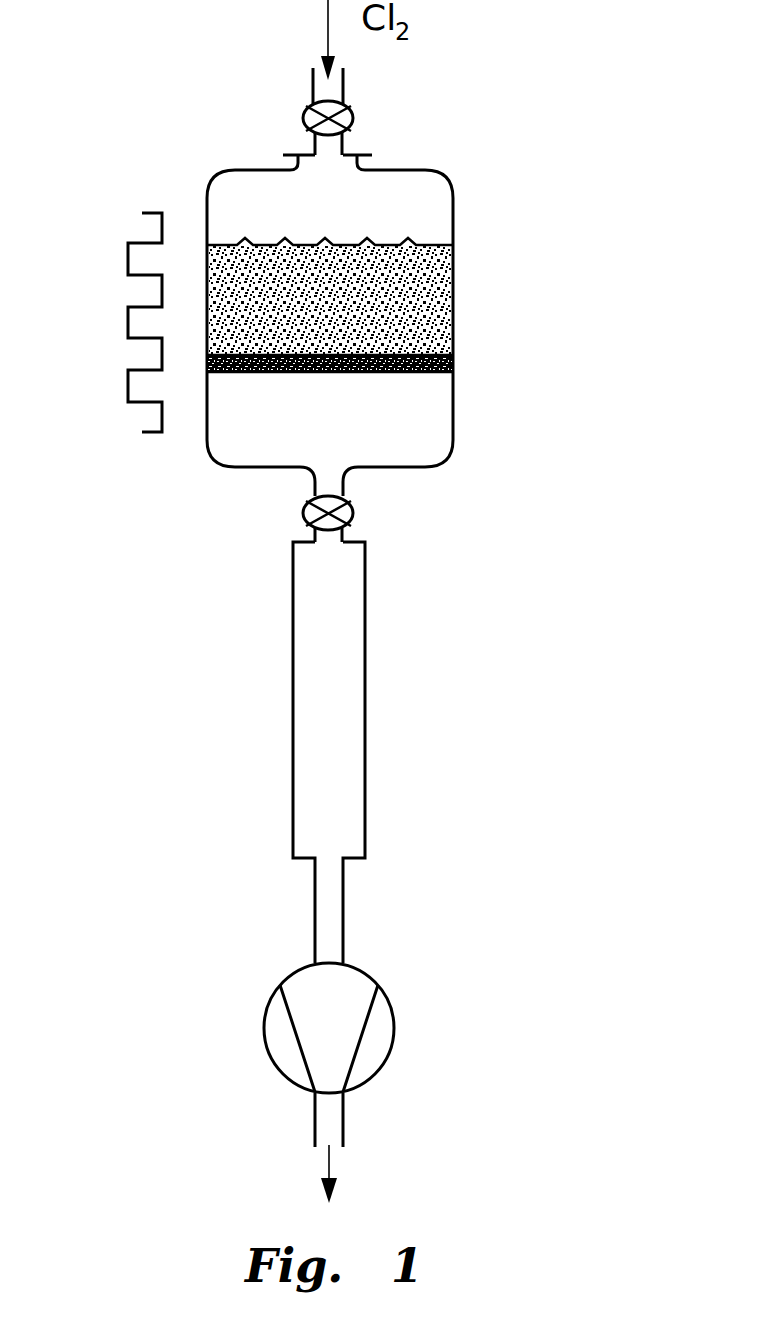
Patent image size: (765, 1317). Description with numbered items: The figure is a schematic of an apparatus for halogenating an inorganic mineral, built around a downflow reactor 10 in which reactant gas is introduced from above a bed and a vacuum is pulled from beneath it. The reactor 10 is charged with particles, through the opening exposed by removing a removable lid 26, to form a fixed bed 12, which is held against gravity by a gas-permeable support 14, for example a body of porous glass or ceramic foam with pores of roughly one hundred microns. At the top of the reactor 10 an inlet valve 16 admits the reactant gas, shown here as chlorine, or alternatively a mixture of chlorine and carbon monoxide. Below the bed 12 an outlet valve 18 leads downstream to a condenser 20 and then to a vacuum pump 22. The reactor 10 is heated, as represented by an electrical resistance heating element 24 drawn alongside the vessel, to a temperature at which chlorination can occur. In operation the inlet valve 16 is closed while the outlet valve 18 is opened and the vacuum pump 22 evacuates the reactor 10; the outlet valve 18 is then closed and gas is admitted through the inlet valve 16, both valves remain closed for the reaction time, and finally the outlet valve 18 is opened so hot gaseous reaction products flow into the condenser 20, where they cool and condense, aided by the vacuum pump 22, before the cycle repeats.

The downflow reactor 10 is at (515, 159).
The fixed bed 12 is at (413, 300).
The gas-permeable support 14 is at (426, 373).
The inlet valve 16 is at (351, 110).
The outlet valve 18 is at (308, 514).
The condenser 20 is at (366, 678).
The vacuum pump 22 is at (395, 1012).
The electrical resistance heating element 24 is at (128, 315).
The removable lid 26 is at (304, 153).